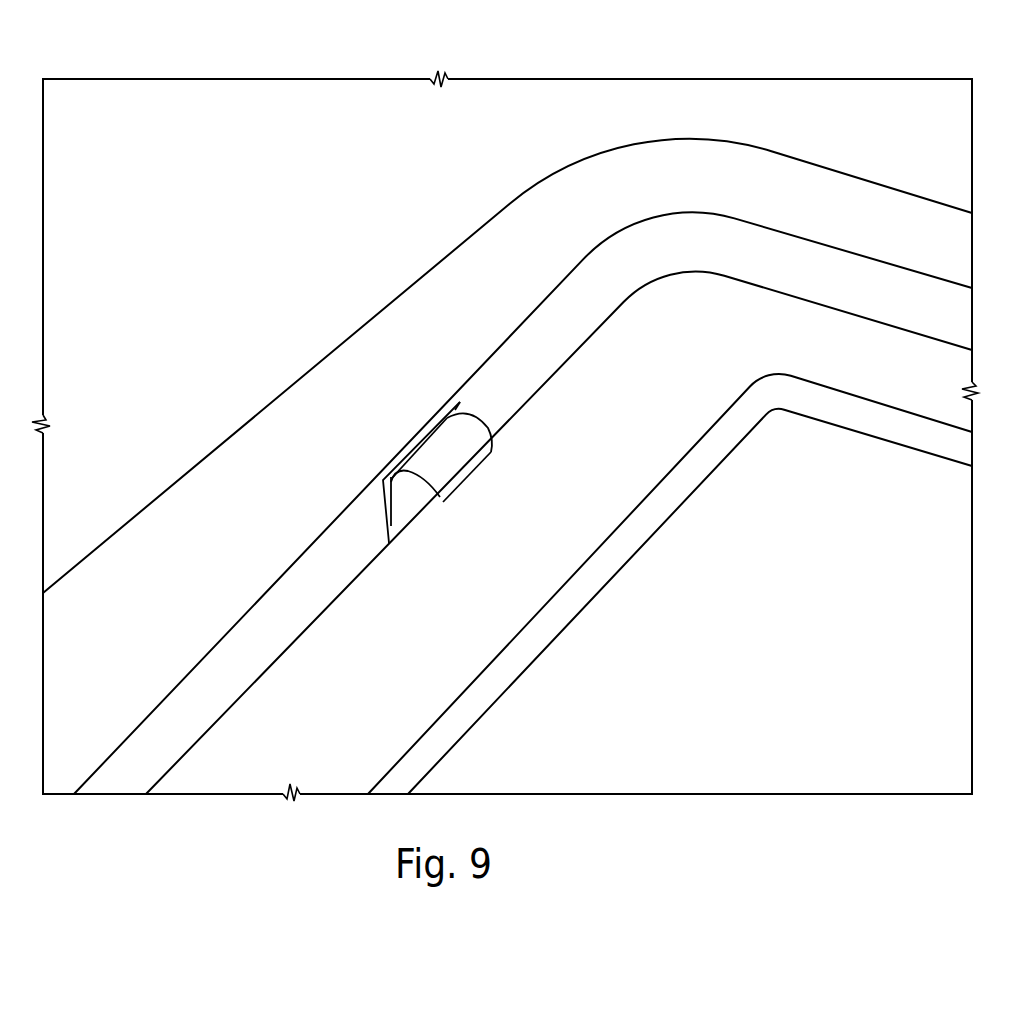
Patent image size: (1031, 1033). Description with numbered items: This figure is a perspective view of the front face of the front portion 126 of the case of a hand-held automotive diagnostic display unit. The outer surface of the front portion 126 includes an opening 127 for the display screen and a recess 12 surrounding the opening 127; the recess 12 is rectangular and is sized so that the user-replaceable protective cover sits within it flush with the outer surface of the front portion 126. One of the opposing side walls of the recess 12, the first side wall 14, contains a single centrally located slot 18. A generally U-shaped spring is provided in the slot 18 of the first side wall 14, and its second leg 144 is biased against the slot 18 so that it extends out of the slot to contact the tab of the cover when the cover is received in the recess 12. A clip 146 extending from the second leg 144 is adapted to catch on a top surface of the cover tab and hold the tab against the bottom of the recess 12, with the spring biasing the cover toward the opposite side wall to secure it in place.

The front portion 126 is at (830, 118).
The first side wall 14 is at (600, 277).
The recess 12 is at (354, 727).
The opening 127 is at (893, 425).
The slot 18 is at (439, 417).
The clip 146 is at (473, 454).
The second leg 144 is at (401, 497).